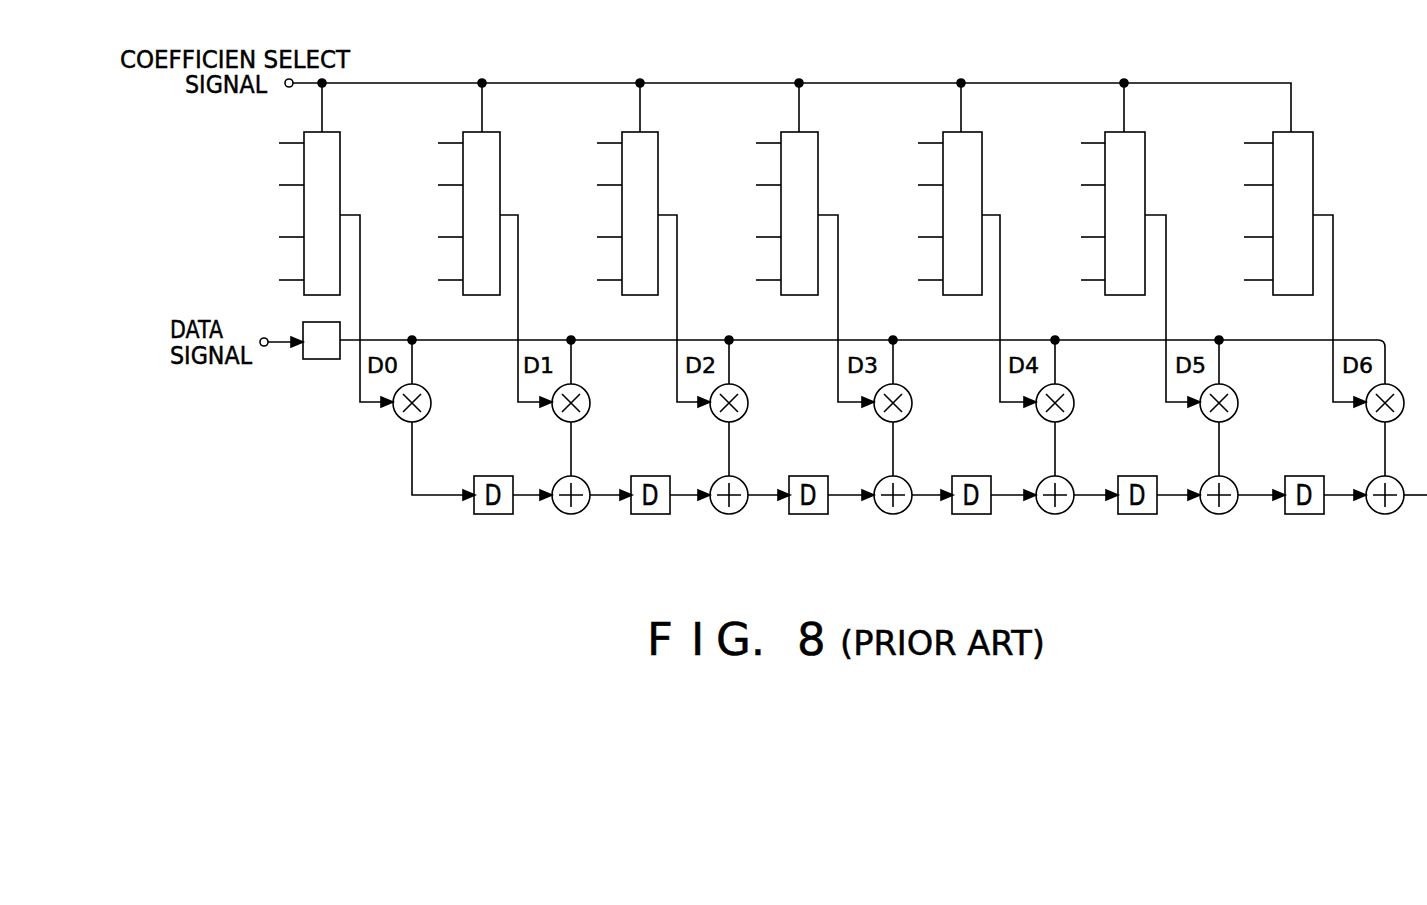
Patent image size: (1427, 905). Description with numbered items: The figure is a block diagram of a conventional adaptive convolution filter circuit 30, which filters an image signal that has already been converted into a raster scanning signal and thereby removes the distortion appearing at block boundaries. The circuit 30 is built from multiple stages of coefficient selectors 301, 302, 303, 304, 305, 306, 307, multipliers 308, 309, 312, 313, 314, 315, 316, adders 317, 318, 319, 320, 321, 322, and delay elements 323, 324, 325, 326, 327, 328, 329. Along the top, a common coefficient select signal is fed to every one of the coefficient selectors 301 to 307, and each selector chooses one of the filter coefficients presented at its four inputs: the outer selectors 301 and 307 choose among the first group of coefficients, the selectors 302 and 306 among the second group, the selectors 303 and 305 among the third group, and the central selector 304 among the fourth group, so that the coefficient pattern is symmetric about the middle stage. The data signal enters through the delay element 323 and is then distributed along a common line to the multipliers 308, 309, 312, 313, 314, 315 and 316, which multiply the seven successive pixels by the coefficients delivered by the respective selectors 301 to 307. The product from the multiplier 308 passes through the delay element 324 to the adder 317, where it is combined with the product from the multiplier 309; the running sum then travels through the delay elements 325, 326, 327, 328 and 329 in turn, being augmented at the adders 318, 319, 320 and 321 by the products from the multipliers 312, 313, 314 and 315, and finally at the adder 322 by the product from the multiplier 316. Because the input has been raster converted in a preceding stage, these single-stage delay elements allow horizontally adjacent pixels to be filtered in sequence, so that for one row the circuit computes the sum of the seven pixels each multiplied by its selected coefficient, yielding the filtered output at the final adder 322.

The adaptive convolution filter circuit 30 is at (806, 64).
The coefficient selector 301 is at (340, 131).
The coefficient selector 302 is at (500, 131).
The coefficient selector 303 is at (658, 131).
The coefficient selector 304 is at (818, 131).
The coefficient selector 305 is at (982, 131).
The coefficient selector 306 is at (1145, 131).
The coefficient selector 307 is at (1313, 131).
The multiplier 308 is at (427, 391).
The multiplier 309 is at (586, 391).
The multiplier 312 is at (744, 391).
The multiplier 313 is at (908, 391).
The multiplier 314 is at (1070, 391).
The multiplier 315 is at (1234, 391).
The multiplier 316 is at (1373, 418).
The adder 317 is at (586, 481).
The adder 318 is at (744, 481).
The adder 319 is at (908, 481).
The adder 320 is at (1070, 481).
The adder 321 is at (1234, 481).
The adder 322 is at (1385, 514).
The delay element 323 is at (316, 360).
The delay element 324 is at (490, 514).
The delay element 325 is at (648, 514).
The delay element 326 is at (806, 514).
The delay element 327 is at (969, 514).
The delay element 328 is at (1134, 514).
The delay element 329 is at (1301, 514).